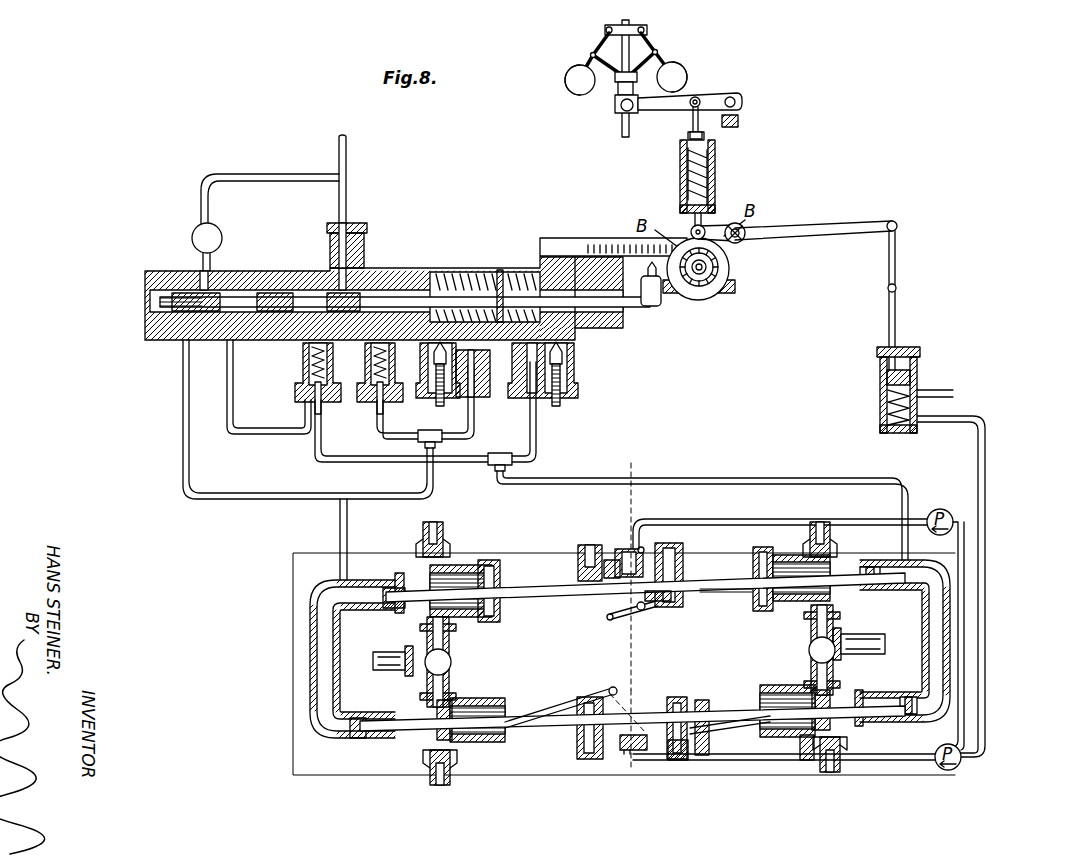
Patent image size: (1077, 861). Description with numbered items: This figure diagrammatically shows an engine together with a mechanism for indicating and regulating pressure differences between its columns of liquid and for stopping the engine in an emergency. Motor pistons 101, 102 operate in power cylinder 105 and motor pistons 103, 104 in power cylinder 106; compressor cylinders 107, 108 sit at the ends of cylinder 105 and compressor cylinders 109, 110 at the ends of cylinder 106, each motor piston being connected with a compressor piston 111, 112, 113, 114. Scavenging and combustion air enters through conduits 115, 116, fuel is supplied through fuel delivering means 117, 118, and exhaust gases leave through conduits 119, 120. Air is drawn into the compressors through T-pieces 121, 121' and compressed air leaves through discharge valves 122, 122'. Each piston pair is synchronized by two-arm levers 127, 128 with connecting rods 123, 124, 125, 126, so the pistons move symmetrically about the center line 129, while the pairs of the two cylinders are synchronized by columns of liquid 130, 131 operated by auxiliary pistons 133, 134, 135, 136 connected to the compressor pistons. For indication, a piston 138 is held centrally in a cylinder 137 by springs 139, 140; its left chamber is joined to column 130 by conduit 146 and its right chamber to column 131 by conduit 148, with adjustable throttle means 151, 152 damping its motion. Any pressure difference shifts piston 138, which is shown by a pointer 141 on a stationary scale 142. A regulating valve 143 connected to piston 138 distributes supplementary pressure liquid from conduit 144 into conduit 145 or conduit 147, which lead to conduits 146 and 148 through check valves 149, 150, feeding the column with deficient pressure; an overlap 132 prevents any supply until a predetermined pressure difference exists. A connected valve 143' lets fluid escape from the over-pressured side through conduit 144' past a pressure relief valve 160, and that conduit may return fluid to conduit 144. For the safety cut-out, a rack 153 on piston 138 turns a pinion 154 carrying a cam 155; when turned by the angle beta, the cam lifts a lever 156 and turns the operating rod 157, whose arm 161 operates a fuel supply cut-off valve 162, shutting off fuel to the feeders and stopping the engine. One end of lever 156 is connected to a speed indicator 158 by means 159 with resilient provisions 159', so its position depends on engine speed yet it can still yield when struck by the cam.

The motor piston 101 is at (498, 720).
The motor piston 102 is at (735, 706).
The motor piston 103 is at (575, 598).
The motor piston 104 is at (730, 592).
The power cylinder 105 is at (683, 705).
The power cylinder 106 is at (652, 600).
The compressor cylinder 107 is at (468, 700).
The compressor cylinder 108 is at (806, 746).
The compressor cylinder 109 is at (440, 566).
The compressor cylinder 110 is at (790, 556).
The compressor piston 111 is at (440, 716).
The compressor piston 112 is at (818, 712).
The compressor piston 113 is at (488, 578).
The compressor piston 114 is at (758, 562).
The conduit 115 is at (678, 757).
The conduit 116 is at (668, 545).
The fuel delivering means 117 is at (627, 752).
The fuel delivering means 118 is at (628, 552).
The exhaust conduit 119 is at (586, 754).
The exhaust conduit 120 is at (580, 548).
The T-piece 121 is at (439, 662).
The T-piece 121' is at (848, 650).
The discharge valve 122 is at (414, 656).
The discharge valve 122' is at (844, 650).
The connecting rod 123 is at (628, 712).
The connecting rod 124 is at (714, 731).
The connecting rod 125 is at (609, 562).
The connecting rod 126 is at (658, 606).
The two-arm lever 127 is at (652, 720).
The two-arm lever 128 is at (642, 608).
The center line 129 is at (649, 566).
The column of liquid 130 is at (293, 655).
The column of liquid 131 is at (935, 628).
The overlap 132 is at (335, 290).
The auxiliary piston 133 is at (352, 744).
The auxiliary piston 134 is at (392, 606).
The auxiliary piston 135 is at (935, 712).
The auxiliary piston 136 is at (877, 568).
The cylinder 137 is at (470, 270).
The piston 138 is at (505, 270).
The spring 139 is at (440, 274).
The spring 140 is at (622, 330).
The pointer 141 is at (680, 300).
The stationary scale 142 is at (640, 252).
The regulating valve 143 is at (294, 261).
The valve 143' is at (365, 300).
The conduit 144 is at (366, 179).
The conduit 144' is at (270, 178).
The conduit 145 is at (380, 428).
The conduit 146 is at (474, 411).
The conduit 147 is at (316, 452).
The conduit 148 is at (525, 481).
The check valve 149 is at (368, 392).
The check valve 150 is at (303, 358).
The adjustable throttle means 151 is at (432, 376).
The adjustable throttle means 152 is at (580, 360).
The rack 153 is at (718, 296).
The pinion 154 is at (722, 252).
The cam 155 is at (722, 270).
The lever 156 is at (728, 226).
The operating rod 157 is at (745, 230).
The speed indicator 158 is at (623, 130).
The connecting means 159 is at (727, 178).
The resilient provisions 159' is at (667, 176).
The pressure relief valve 160 is at (192, 232).
The arm 161 is at (850, 226).
The fuel supply cut-off valve 162 is at (878, 400).